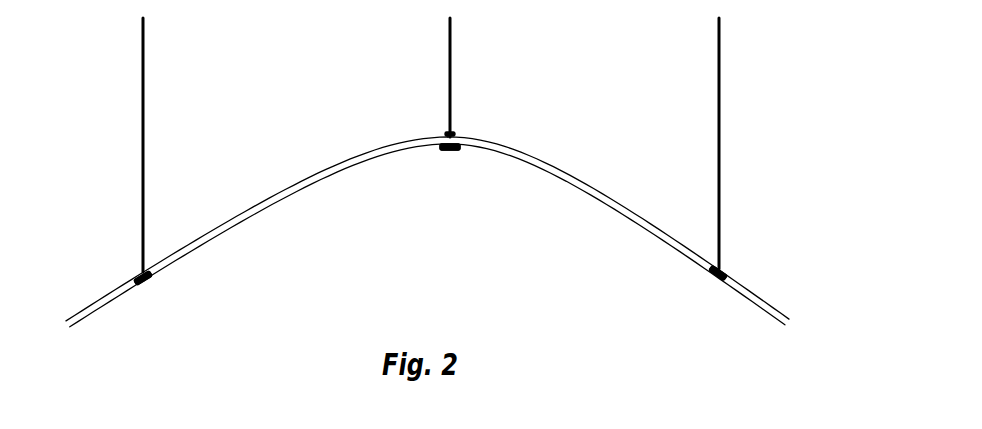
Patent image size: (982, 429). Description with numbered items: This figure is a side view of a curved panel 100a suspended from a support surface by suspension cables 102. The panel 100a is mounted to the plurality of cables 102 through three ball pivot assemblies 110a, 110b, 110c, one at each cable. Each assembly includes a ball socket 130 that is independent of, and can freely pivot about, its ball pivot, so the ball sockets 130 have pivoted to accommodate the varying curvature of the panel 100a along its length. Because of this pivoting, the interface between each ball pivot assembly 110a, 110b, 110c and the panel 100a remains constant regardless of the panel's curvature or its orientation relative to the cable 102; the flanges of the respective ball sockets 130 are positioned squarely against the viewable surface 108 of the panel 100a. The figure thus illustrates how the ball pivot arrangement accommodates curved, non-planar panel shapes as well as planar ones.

The panel 100a is at (771, 306).
The suspension cable 102 is at (145, 104).
The viewable surface 108 is at (102, 318).
The ball pivot assembly 110a is at (167, 291).
The ball pivot assembly 110b is at (444, 164).
The ball pivot assembly 110c is at (702, 294).
The ball socket 130 is at (151, 282).